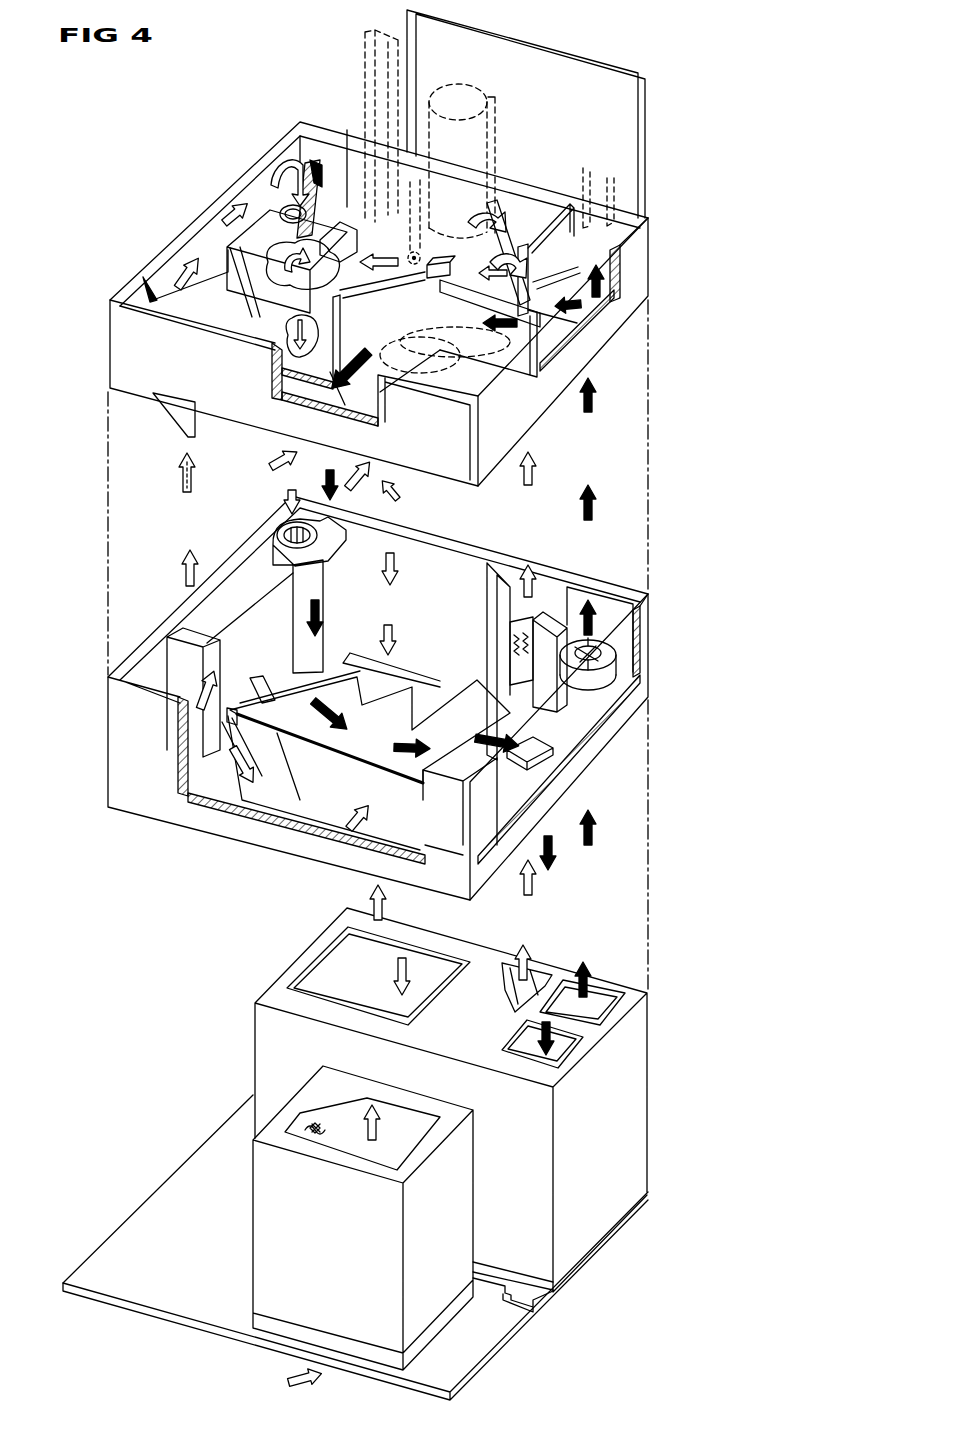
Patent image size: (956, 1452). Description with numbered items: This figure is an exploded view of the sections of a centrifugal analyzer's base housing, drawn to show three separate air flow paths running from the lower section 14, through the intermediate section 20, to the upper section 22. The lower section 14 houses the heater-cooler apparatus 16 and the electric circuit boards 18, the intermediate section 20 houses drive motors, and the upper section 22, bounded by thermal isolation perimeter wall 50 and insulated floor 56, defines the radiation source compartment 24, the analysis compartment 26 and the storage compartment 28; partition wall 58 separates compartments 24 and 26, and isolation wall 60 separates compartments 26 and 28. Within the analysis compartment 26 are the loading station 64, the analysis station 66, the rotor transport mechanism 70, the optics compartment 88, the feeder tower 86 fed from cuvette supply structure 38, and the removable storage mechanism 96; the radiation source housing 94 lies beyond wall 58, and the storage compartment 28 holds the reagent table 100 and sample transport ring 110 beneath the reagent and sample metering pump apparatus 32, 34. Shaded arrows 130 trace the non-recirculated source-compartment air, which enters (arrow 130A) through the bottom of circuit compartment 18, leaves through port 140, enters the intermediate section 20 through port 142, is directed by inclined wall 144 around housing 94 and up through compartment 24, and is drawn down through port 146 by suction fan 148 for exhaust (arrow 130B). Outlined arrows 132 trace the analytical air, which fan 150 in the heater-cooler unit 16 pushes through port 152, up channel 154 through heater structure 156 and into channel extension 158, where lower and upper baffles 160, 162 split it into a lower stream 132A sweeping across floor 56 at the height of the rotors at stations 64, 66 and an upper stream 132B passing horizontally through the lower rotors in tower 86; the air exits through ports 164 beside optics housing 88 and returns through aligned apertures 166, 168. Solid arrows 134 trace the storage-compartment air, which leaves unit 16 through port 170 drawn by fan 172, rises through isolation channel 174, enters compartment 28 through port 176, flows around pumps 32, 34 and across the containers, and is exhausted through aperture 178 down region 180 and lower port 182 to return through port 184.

The lower section 14 is at (660, 1120).
The heater-cooler apparatus 16 is at (255, 1063).
The electric circuit boards 18 is at (250, 1249).
The intermediate section 20 is at (660, 698).
The upper section 22 is at (664, 269).
The radiation source compartment 24 is at (210, 249).
The analysis compartment 26 is at (338, 182).
The storage compartment 28 is at (482, 344).
The reagent metering pump apparatus 32 is at (583, 166).
The sample metering pump apparatus 34 is at (612, 174).
The cuvette supply structure 38 is at (480, 77).
The thermal isolation perimeter wall 50 is at (207, 211).
The insulated floor 56 is at (352, 230).
The partition wall 58 is at (332, 148).
The isolation wall 60 is at (540, 240).
The loading station 64 is at (425, 322).
The analysis station 66 is at (324, 342).
The rotor transport mechanism 70 is at (414, 252).
The feeder tower 86 is at (443, 84).
The optics compartment 88 is at (346, 253).
The radiation source housing 94 is at (195, 424).
The removable storage mechanism 96 is at (390, 26).
The reagent table 100 is at (420, 353).
The sample transport ring 110 is at (420, 335).
The air stream for radiation source compartment 130 is at (182, 478).
The air stream entry 130A is at (284, 1376).
The air stream exhaust 130B is at (353, 493).
The air flow for analytical compartment 132 is at (276, 464).
The lower stream 132A is at (495, 287).
The upper stream 132B is at (442, 230).
The air stream for storage compartment 134 is at (596, 498).
The port 140 is at (430, 1122).
The port 142 is at (332, 838).
The inclined wall 144 is at (364, 790).
The port 146 is at (290, 214).
The suction fan 148 is at (288, 536).
The fan 150 is at (520, 997).
The port 152 is at (533, 978).
The channel 154 is at (540, 585).
The heater structure 156 is at (518, 645).
The channel extension 158 is at (528, 262).
The lower baffle 160 is at (490, 235).
The upper baffle 162 is at (503, 258).
The ports 164 is at (304, 298).
The aperture 166 is at (440, 678).
The aperture 168 is at (436, 957).
The port 170 is at (613, 1000).
The fan 172 is at (592, 654).
The isolation channel 174 is at (615, 600).
The port 176 is at (583, 323).
The aperture 178 is at (345, 405).
The region 180 is at (507, 727).
The lower port 182 is at (537, 748).
The port 184 is at (566, 1032).